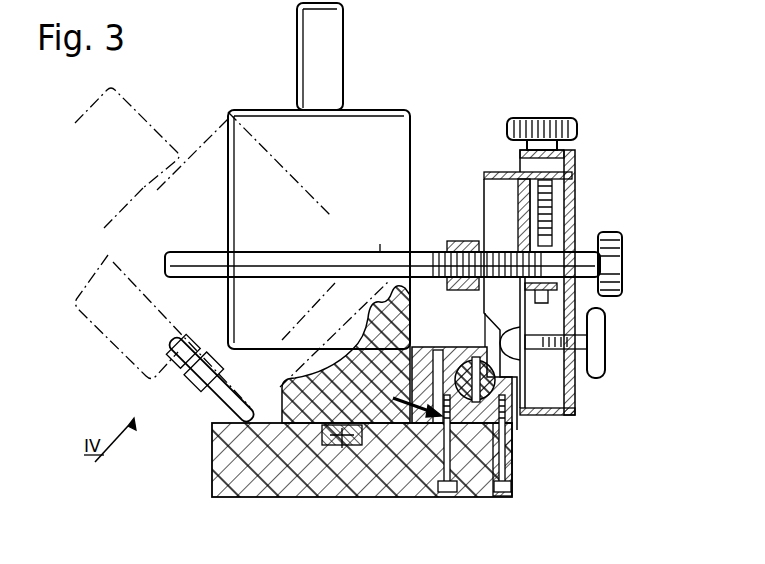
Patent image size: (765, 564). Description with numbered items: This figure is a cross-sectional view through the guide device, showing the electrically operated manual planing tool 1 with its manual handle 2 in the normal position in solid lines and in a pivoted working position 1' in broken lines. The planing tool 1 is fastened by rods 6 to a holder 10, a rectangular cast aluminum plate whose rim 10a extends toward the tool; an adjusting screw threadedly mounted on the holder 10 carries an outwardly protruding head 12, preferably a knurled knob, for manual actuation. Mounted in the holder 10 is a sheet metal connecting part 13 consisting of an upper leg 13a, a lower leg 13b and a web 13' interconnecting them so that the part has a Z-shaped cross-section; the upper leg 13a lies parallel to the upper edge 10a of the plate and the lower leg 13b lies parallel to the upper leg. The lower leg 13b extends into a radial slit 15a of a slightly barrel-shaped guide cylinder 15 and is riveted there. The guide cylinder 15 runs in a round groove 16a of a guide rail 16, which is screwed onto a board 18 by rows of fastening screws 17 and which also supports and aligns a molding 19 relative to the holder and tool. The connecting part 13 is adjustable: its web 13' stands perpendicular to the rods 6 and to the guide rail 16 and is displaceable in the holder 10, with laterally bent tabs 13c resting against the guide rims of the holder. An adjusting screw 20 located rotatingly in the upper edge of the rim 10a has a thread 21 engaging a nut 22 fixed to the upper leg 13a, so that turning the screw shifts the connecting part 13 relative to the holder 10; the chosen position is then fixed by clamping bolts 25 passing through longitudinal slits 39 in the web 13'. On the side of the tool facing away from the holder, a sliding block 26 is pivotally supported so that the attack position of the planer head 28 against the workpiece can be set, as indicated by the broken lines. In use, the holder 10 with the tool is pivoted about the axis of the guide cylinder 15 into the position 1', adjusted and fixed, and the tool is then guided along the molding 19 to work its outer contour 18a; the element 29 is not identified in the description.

The manual planing tool 1 is at (319, 195).
The pivoted position of the planing tool 1' is at (229, 247).
The manual handle 2 is at (328, 53).
The rods 6 is at (198, 258).
The holder 10 is at (580, 299).
The rim of the holder 10a is at (490, 172).
The head of the adjusting screw 12 is at (614, 256).
The connecting part 13 is at (488, 215).
The web of the connecting part 13' is at (481, 186).
The upper leg of the connecting part 13a is at (575, 184).
The lower leg of the connecting part 13b is at (520, 402).
The laterally bent tabs 13c is at (575, 390).
The guide cylinders 15 is at (466, 358).
The radial slit of the guide cylinder 15a is at (515, 428).
The guide rail 16 is at (512, 440).
The round groove of the guide rail 16a is at (460, 362).
The fastening screws 17 is at (447, 493).
The board 18 is at (288, 478).
The outer contour 18a is at (222, 448).
The molding 19 is at (312, 395).
The adjusting screw 20 is at (540, 122).
The thread of the adjusting screw 21 is at (575, 218).
The nut 22 is at (562, 204).
The clamping bolts 25 is at (608, 352).
The sliding block 26 is at (208, 405).
The planer head 28 is at (218, 348).
The rod axis 29 is at (380, 246).
The longitudinal slits 39 is at (518, 243).